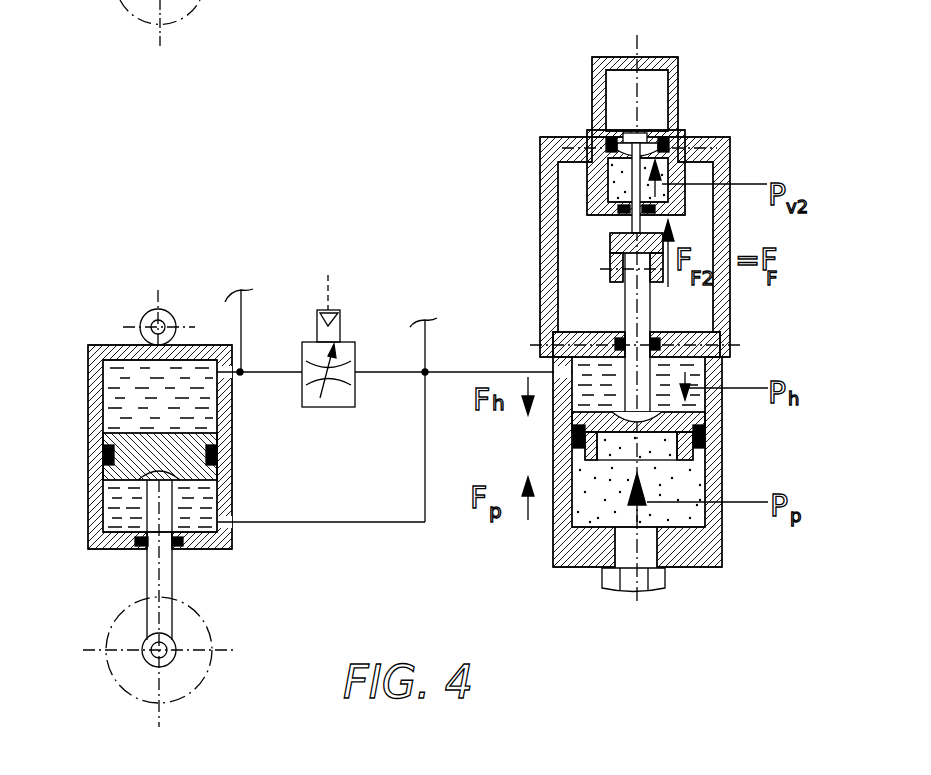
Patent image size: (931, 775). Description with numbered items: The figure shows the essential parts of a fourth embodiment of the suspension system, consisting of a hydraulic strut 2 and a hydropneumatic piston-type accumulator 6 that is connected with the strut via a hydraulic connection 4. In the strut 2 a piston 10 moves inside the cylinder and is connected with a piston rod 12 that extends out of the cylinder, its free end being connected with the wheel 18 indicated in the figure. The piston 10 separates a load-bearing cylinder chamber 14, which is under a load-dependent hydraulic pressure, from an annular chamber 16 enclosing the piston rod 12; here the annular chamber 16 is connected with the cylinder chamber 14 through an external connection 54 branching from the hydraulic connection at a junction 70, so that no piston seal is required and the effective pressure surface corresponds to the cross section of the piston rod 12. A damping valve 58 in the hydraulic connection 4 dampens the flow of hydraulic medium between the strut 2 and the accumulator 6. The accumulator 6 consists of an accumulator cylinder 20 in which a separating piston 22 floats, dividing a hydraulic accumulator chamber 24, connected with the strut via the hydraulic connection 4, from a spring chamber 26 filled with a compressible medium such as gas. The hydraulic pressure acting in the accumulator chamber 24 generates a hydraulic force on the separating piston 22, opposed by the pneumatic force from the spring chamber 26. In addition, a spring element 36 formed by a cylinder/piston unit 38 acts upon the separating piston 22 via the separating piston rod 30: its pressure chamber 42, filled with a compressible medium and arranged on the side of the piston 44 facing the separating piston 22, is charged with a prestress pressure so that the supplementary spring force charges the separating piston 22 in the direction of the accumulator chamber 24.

The hydraulic strut 2 is at (88, 355).
The cylinder chamber 14 is at (118, 390).
The piston 10 is at (118, 473).
The annular chamber 16 is at (118, 515).
The piston rod 12 is at (167, 575).
The wheel 18 is at (205, 626).
The hydraulic connection 4 is at (450, 368).
The line junction 70 is at (233, 377).
The external connection 54 is at (385, 522).
The damping valve 58 is at (357, 393).
The spring element 36 is at (687, 110).
The cylinder/piston unit 38 is at (592, 130).
The piston 44 is at (730, 95).
The pressure chamber 42 is at (627, 182).
The separating piston rod 30 is at (642, 308).
The accumulator chamber 24 is at (695, 402).
The separating piston 22 is at (588, 460).
The accumulator cylinder 20 is at (570, 528).
The spring chamber 26 is at (687, 520).
The hydropneumatic piston-type accumulator 6 is at (552, 552).